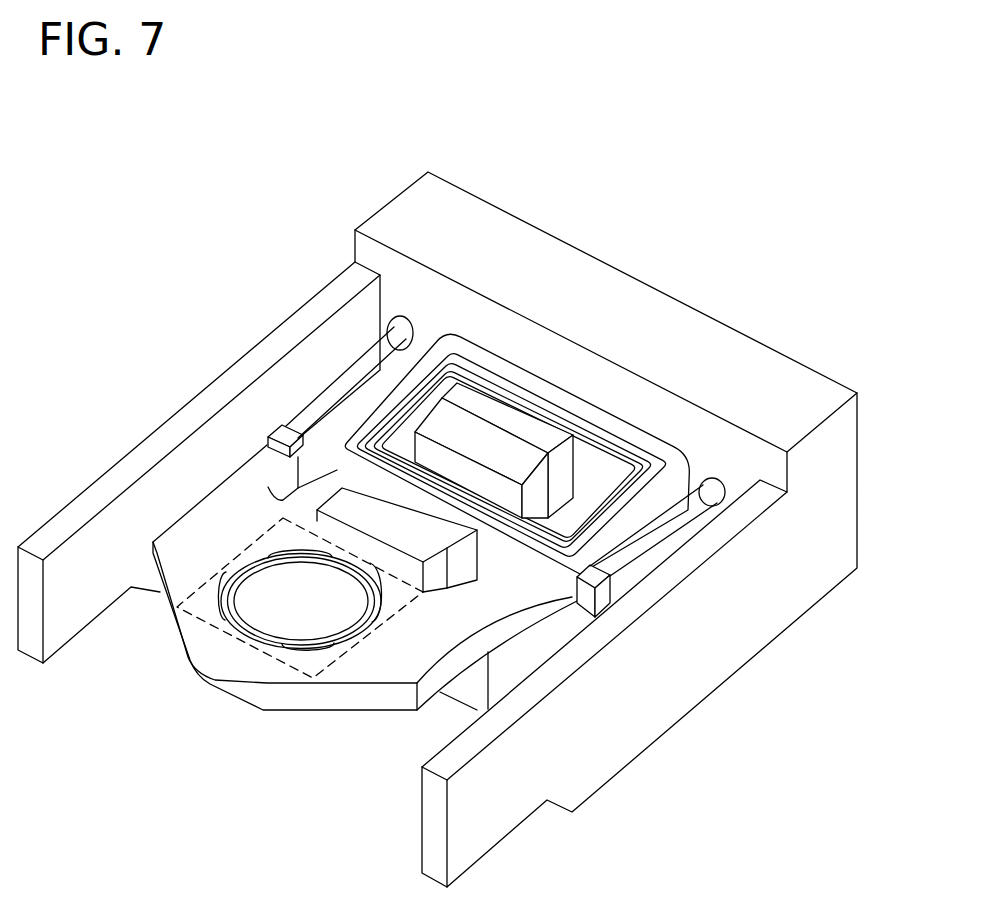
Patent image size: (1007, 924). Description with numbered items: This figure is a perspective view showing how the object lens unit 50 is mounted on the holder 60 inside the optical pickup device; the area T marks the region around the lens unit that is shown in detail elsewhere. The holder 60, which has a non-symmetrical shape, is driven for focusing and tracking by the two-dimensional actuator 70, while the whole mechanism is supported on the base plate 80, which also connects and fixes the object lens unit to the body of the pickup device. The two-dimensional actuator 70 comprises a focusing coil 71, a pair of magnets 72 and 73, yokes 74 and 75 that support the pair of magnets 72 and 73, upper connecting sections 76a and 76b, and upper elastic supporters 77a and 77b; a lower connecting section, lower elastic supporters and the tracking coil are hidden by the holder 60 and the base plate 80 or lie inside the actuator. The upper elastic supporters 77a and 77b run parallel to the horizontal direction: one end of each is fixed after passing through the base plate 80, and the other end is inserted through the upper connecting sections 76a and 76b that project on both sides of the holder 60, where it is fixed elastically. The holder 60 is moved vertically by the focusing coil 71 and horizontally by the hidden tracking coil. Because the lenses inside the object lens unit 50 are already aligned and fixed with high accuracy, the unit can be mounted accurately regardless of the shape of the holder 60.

The object lens unit 50 is at (315, 646).
The holder 60 is at (229, 683).
The two-dimensional actuator 70 is at (450, 474).
The focusing coil 71 is at (487, 387).
The magnet 72 is at (600, 441).
The magnet 73 is at (440, 590).
The yoke 74 is at (573, 453).
The yoke 75 is at (365, 642).
The upper connecting section 76a is at (577, 605).
The upper connecting section 76b is at (278, 427).
The upper elastic supporter 77a is at (650, 550).
The upper elastic supporter 77b is at (350, 373).
The base plate 80 is at (668, 296).
The area T is at (199, 620).